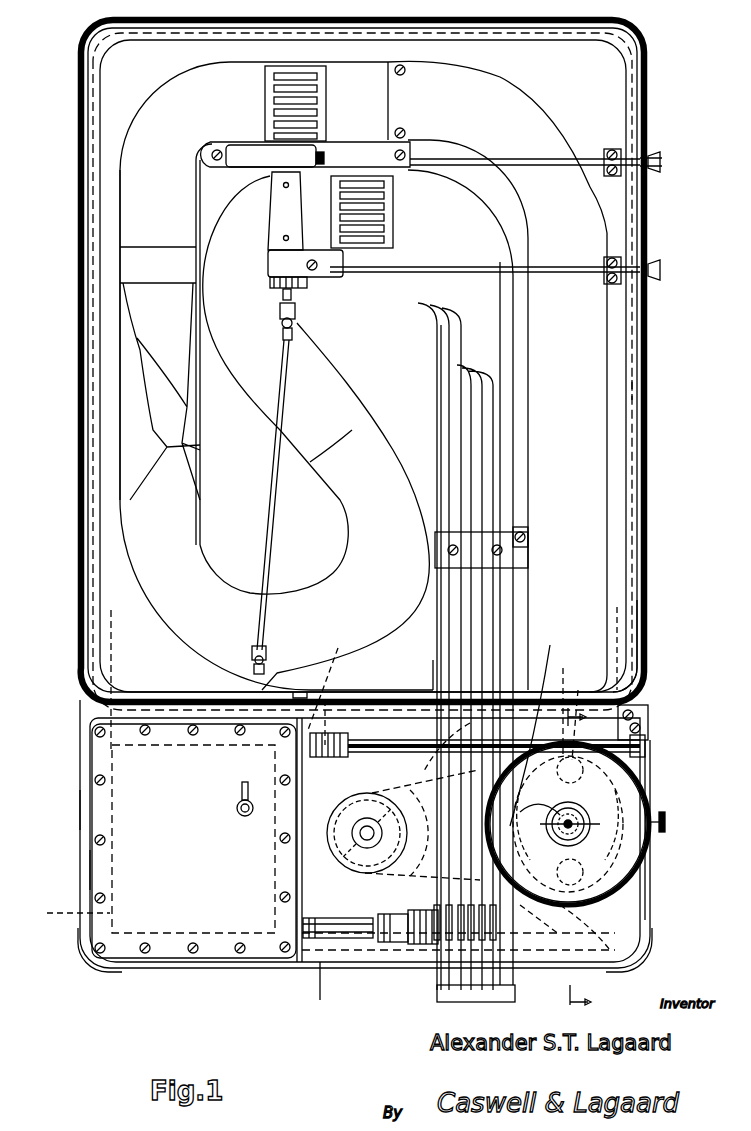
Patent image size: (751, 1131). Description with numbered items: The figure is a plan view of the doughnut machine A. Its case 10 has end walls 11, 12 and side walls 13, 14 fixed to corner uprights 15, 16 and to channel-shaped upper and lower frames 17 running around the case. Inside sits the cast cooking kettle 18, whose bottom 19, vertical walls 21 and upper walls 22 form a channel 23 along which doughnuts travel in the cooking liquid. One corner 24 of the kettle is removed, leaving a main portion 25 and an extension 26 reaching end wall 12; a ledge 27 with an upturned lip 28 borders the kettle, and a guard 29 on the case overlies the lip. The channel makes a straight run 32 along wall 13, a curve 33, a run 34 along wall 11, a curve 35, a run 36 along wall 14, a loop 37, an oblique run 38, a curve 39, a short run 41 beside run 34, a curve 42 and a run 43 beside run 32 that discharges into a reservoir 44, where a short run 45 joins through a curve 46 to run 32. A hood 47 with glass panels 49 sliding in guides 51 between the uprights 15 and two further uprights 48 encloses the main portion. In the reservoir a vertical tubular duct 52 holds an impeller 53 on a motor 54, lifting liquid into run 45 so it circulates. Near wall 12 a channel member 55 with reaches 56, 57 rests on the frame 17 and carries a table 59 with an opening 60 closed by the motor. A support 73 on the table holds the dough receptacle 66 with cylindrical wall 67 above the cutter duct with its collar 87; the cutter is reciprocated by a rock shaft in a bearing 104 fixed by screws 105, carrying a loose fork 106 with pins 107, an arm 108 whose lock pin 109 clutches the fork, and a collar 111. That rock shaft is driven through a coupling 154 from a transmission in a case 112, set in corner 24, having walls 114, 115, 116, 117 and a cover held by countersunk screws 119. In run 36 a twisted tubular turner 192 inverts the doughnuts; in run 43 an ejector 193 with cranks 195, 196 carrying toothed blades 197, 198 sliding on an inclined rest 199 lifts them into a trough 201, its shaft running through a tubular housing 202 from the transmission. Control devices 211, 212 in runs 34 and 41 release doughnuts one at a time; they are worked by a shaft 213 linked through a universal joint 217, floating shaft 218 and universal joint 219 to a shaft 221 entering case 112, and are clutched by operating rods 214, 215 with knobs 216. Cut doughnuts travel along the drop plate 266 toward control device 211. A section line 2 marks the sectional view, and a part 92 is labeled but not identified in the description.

The case 10 is at (650, 878).
The end wall 11 is at (522, 15).
The end wall 12 is at (347, 967).
The side wall 13 is at (648, 745).
The side wall 14 is at (82, 808).
The upright 15 is at (77, 48).
The upright 16 is at (650, 942).
The frame 17 is at (617, 607).
The cooking kettle 18 is at (372, 422).
The bottom 19 is at (403, 513).
The vertical walls 21 is at (347, 568).
The upper walls 22 is at (247, 510).
The channel 23 is at (313, 460).
The corner 24 is at (331, 679).
The main portion 25 is at (617, 350).
The extension 26 is at (545, 950).
The ledge 27 is at (617, 482).
The lip 28 is at (640, 563).
The guard 29 is at (628, 395).
The straight run 32 is at (592, 445).
The curve 33 is at (537, 112).
The straight run 34 is at (357, 83).
The curve 35 is at (160, 108).
The straight run 36 is at (120, 243).
The loop 37 is at (217, 600).
The straight run 38 is at (268, 395).
The curve 39 is at (233, 220).
The short straight run 41 is at (347, 183).
The curve 42 is at (458, 222).
The straight run 43 is at (507, 333).
The reservoir 44 is at (432, 690).
The short run 45 is at (395, 878).
The curve 46 is at (615, 965).
The hood 47 is at (80, 115).
The uprights 48 is at (82, 698).
The glass panels 49 is at (648, 515).
The guides 51 is at (645, 628).
The vertical tubular duct 52 is at (367, 738).
The impeller 53 is at (328, 840).
The motor 54 is at (347, 873).
The channel member 55 is at (650, 925).
The reach 56 is at (578, 935).
The reach 57 is at (650, 857).
The plate 59 is at (605, 915).
The opening 60 is at (248, 818).
The dough receptacle 66 is at (653, 790).
The cylindrical wall 67 is at (545, 900).
The support 73 is at (580, 716).
The collar 87 is at (580, 862).
The lever 92 is at (533, 813).
The bearing 104 is at (630, 733).
The screws 105 is at (643, 707).
The fork 106 is at (565, 704).
The pins 107 is at (385, 752).
The arm 108 is at (648, 770).
The lock pin 109 is at (668, 820).
The collar 111 is at (534, 726).
The case 112 is at (158, 982).
The wall 114 is at (158, 718).
The wall 115 is at (300, 870).
The wall 116 is at (232, 965).
The wall 117 is at (90, 868).
The countersunk screws 119 is at (100, 732).
The coupling 154 is at (340, 730).
The twisted tubular turner 192 is at (133, 407).
The ejector 193 is at (500, 443).
The crank 195 is at (465, 905).
The crank 196 is at (440, 990).
The toothed blades 197 is at (420, 304).
The toothed blades 198 is at (500, 352).
The inclined rest 199 is at (505, 313).
The trough 201 is at (437, 968).
The tubular housing 202 is at (325, 932).
The control device 211 is at (265, 100).
The control device 212 is at (392, 215).
The shaft 213 is at (283, 292).
The operating rod 214 is at (530, 158).
The operating rod 215 is at (545, 267).
The knobs 216 is at (662, 162).
The universal joint 217 is at (298, 325).
The floating shaft 218 is at (272, 525).
The universal joint 219 is at (267, 660).
The shaft 221 is at (247, 690).
The drop plate 266 is at (597, 468).
The section line 2 is at (589, 860).
The doughnut machine A is at (648, 85).